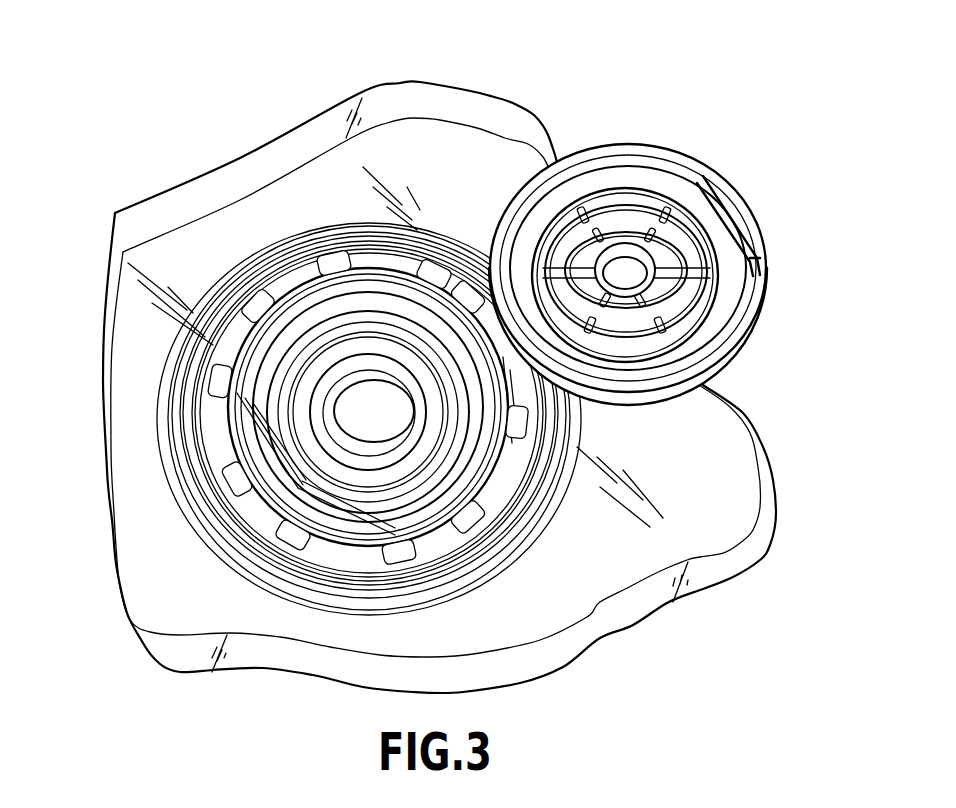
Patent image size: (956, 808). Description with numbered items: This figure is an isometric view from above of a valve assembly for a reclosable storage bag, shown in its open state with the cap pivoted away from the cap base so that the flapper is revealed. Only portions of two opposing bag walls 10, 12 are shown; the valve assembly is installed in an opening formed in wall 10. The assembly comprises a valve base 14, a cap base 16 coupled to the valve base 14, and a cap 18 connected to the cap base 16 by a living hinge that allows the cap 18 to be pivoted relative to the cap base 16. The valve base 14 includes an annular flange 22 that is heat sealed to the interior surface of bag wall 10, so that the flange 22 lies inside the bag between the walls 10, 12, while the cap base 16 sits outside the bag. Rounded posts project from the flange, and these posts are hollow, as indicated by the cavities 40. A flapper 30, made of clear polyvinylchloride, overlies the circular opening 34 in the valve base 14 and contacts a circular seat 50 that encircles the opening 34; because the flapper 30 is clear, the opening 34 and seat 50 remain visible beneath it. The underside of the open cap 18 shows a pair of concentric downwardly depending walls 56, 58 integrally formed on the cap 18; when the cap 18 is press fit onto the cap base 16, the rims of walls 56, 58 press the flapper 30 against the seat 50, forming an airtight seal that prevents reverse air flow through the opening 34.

The wall 10 is at (748, 424).
The wall 12 is at (732, 567).
The valve base 14 is at (200, 520).
The cap base 16 is at (305, 297).
The cap 18 is at (664, 147).
The annular flange 22 is at (158, 377).
The flapper 30 is at (363, 335).
The opening 34 is at (352, 385).
The cavities 40 is at (210, 405).
The seat 50 is at (397, 363).
The wall 56 is at (648, 267).
The wall 58 is at (672, 235).